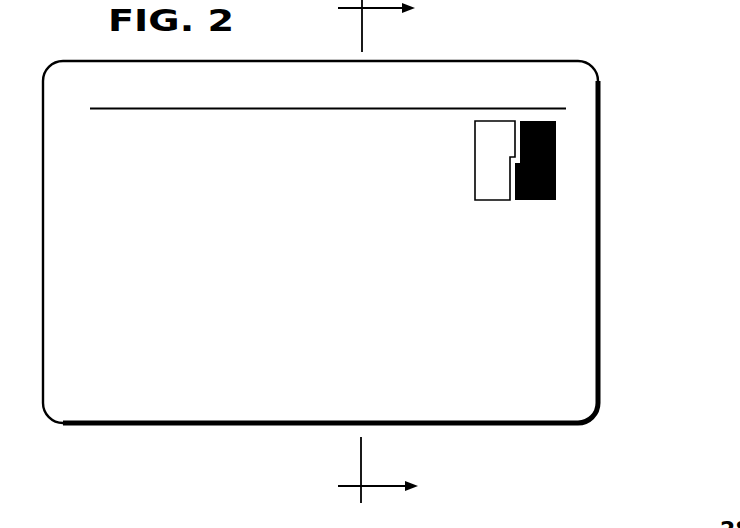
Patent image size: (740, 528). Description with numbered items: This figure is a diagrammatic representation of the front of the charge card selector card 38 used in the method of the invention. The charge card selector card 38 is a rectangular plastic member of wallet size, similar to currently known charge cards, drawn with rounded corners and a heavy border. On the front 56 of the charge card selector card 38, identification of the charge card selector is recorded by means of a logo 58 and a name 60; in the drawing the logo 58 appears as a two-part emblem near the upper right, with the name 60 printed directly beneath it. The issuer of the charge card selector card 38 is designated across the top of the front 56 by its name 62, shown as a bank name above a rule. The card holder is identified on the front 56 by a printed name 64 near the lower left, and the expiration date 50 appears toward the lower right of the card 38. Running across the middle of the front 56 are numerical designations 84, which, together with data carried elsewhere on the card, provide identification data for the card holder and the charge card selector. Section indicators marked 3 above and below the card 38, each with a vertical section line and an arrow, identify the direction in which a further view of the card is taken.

The section line of FIG. 3 is at (387, 251).
The charge card selector card 38 is at (598, 285).
The expiration date 50 is at (560, 331).
The front 56 is at (112, 172).
The logo 58 is at (556, 134).
The name 60 is at (560, 213).
The name 62 is at (248, 112).
The printed name 64 is at (130, 362).
The numerical designations 84 is at (255, 283).